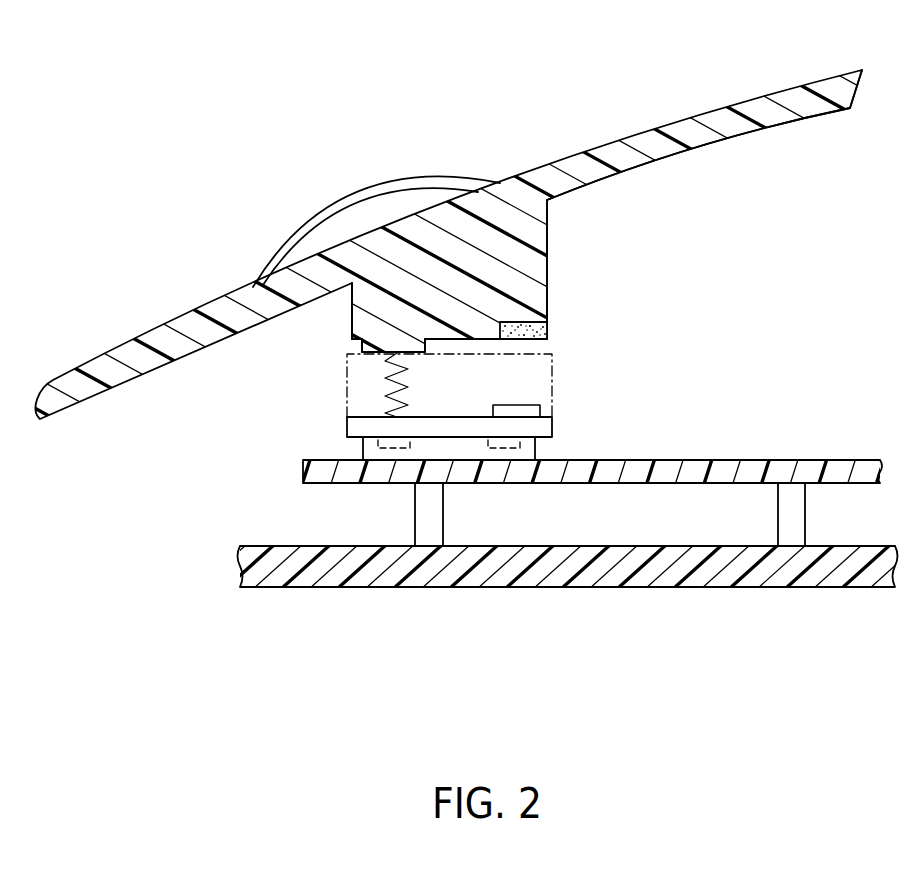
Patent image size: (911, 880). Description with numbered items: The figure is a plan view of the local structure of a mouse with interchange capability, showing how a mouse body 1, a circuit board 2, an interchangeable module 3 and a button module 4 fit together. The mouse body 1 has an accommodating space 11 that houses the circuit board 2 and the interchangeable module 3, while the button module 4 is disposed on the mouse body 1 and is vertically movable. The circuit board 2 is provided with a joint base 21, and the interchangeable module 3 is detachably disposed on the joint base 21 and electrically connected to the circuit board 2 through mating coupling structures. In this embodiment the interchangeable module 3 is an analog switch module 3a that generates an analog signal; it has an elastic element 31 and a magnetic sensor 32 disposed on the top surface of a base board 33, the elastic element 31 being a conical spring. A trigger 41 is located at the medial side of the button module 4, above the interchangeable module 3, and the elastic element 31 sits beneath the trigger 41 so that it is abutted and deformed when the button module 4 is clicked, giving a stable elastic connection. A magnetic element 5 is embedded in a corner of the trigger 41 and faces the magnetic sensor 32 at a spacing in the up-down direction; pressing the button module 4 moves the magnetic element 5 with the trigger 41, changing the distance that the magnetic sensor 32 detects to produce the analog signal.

The mouse body 1 is at (368, 588).
The circuit board 2 is at (727, 453).
The joint base 21 is at (363, 448).
The interchangeable module 3 is at (243, 398).
The analog switch module 3a is at (340, 405).
The elastic element 31 is at (386, 378).
The magnetic sensor 32 is at (552, 407).
The base board 33 is at (552, 432).
The button module 4 is at (562, 160).
The trigger 41 is at (547, 283).
The magnetic element 5 is at (547, 330).
The accommodating space 11 is at (748, 195).